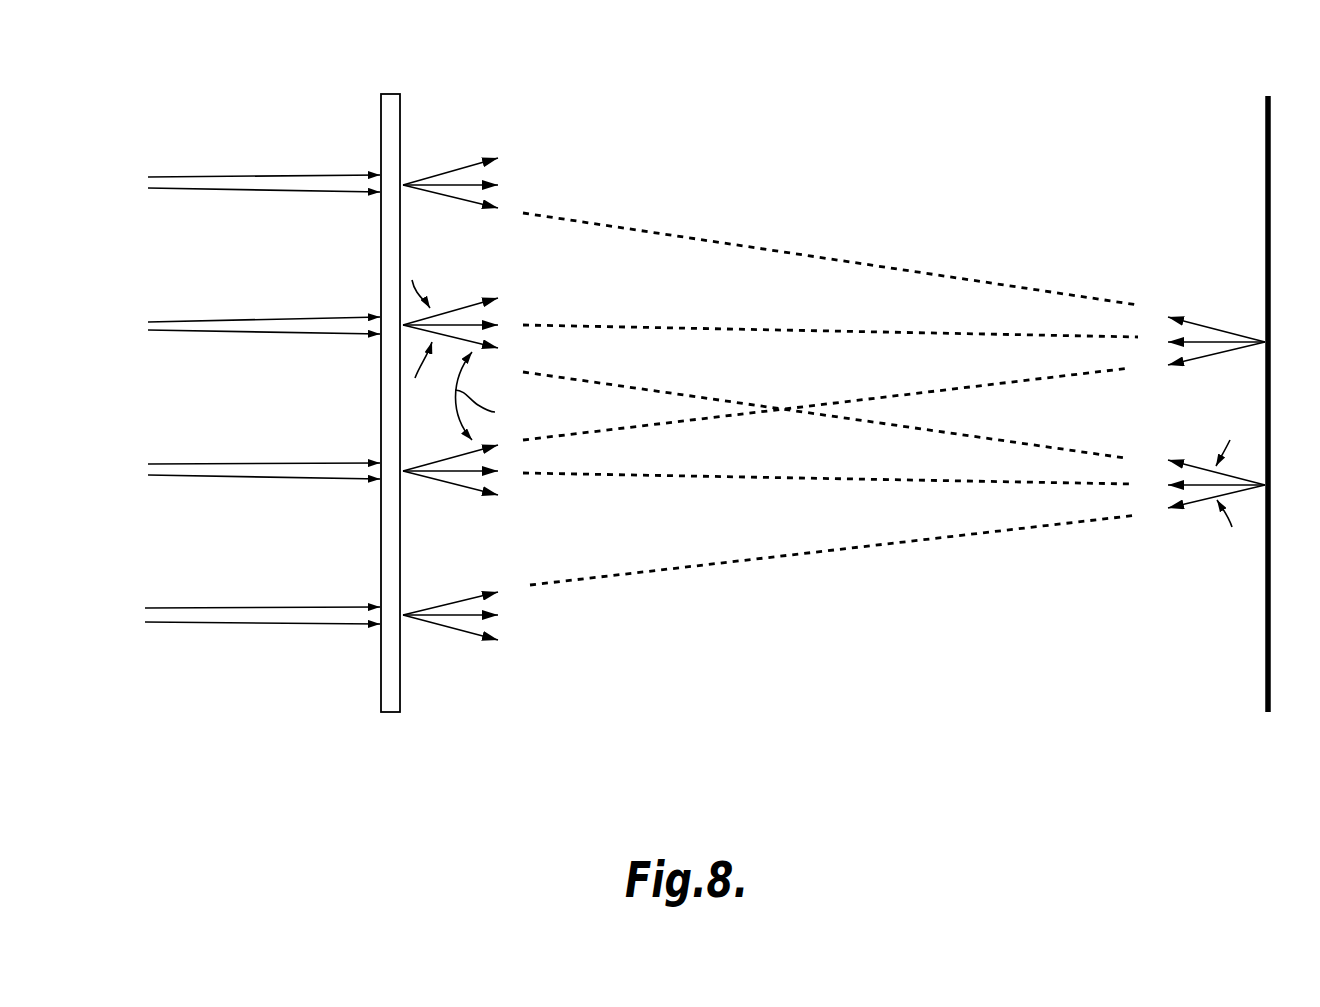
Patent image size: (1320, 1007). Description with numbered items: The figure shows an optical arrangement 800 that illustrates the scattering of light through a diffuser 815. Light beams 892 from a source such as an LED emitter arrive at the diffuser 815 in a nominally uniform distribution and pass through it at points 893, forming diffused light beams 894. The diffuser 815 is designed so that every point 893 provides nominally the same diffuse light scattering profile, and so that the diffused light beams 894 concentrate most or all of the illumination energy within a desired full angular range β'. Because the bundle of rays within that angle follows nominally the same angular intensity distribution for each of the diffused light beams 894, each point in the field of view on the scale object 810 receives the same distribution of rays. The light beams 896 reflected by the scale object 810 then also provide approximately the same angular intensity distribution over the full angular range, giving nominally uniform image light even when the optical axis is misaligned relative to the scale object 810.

The optical arrangement 800 is at (1112, 82).
The scale object 810 is at (1265, 158).
The diffuser 815 is at (386, 93).
The light beams 892 is at (283, 160).
The points 893 is at (407, 177).
The diffused light beams 894 is at (498, 150).
The reflected light beams 896 is at (1223, 316).